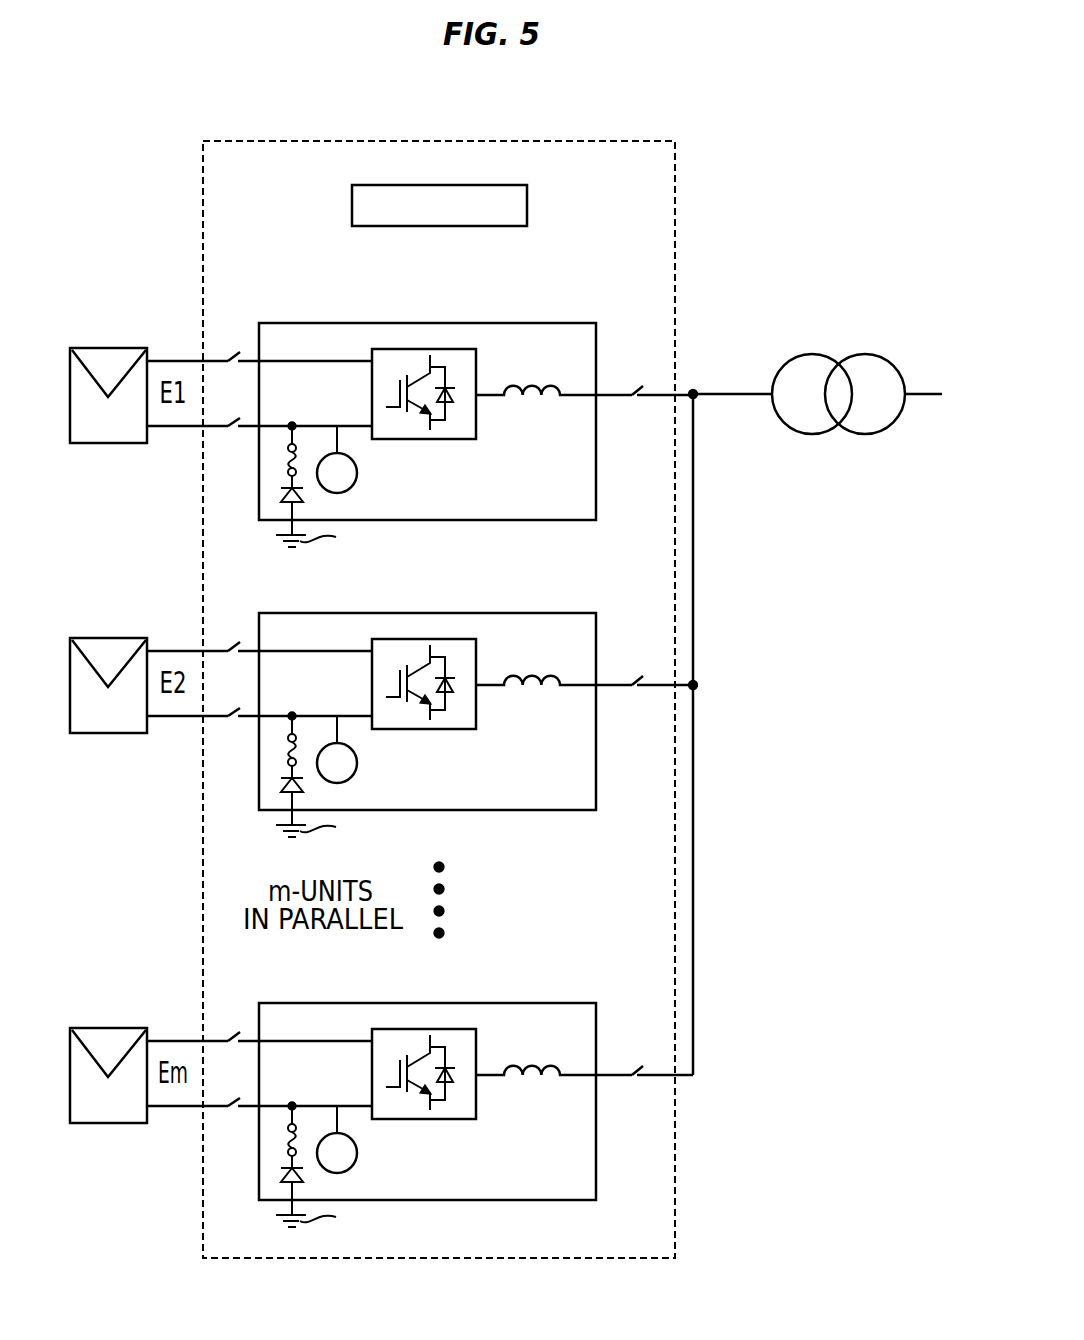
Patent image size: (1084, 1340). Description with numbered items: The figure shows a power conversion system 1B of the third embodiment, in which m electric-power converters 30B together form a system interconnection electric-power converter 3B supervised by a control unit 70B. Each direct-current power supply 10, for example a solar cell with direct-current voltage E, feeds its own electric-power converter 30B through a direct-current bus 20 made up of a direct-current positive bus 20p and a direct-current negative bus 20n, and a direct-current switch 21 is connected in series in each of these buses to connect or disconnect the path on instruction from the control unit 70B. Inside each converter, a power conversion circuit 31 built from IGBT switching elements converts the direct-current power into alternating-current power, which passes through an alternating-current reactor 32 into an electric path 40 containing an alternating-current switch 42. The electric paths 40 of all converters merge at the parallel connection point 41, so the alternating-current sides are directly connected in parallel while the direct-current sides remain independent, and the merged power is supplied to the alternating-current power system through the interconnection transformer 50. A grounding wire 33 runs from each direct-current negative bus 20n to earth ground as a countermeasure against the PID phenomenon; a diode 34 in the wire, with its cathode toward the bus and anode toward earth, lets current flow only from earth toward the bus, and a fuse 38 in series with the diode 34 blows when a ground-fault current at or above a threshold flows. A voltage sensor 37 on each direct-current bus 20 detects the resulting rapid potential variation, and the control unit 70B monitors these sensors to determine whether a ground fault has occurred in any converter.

The power conversion system 1B is at (830, 170).
The system interconnection electric-power converter 3B is at (677, 150).
The control unit 70B is at (527, 205).
The direct-current power supply 10 is at (100, 347).
The direct-current bus 20 is at (224, 730).
The direct-current positive bus 20p is at (165, 361).
The direct-current negative bus 20n is at (163, 430).
The direct-current switch 21 is at (230, 352).
The electric-power converter 30B is at (550, 323).
The power conversion circuit 31 is at (476, 352).
The alternating-current reactor 32 is at (540, 385).
The grounding wire 33 is at (287, 443).
The diode 34 is at (287, 495).
The voltage sensor 37 is at (357, 473).
The fuse 38 is at (287, 468).
The electric path 40 is at (658, 398).
The parallel connection point 41 is at (697, 390).
The alternating-current switch 42 is at (627, 388).
The interconnection transformer 50 is at (863, 358).